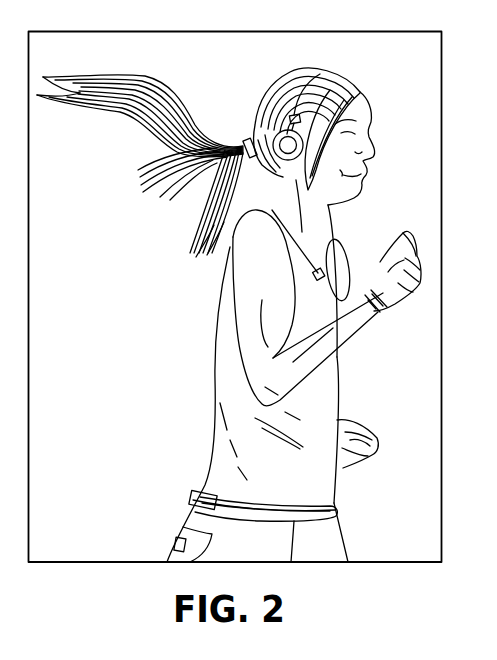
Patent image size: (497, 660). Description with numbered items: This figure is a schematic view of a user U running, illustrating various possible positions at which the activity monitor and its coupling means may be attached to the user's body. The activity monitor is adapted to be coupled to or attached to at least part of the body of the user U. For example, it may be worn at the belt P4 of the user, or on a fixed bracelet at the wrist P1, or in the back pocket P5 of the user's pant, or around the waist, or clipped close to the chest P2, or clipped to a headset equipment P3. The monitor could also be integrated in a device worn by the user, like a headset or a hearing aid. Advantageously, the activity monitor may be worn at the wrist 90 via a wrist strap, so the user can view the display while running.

The user U is at (253, 240).
The wrist P1 is at (323, 268).
The chest P2 is at (383, 313).
The headset equipment P3 is at (290, 120).
The belt P4 is at (198, 497).
The back pocket P5 is at (176, 545).
The wrist 90 is at (360, 320).